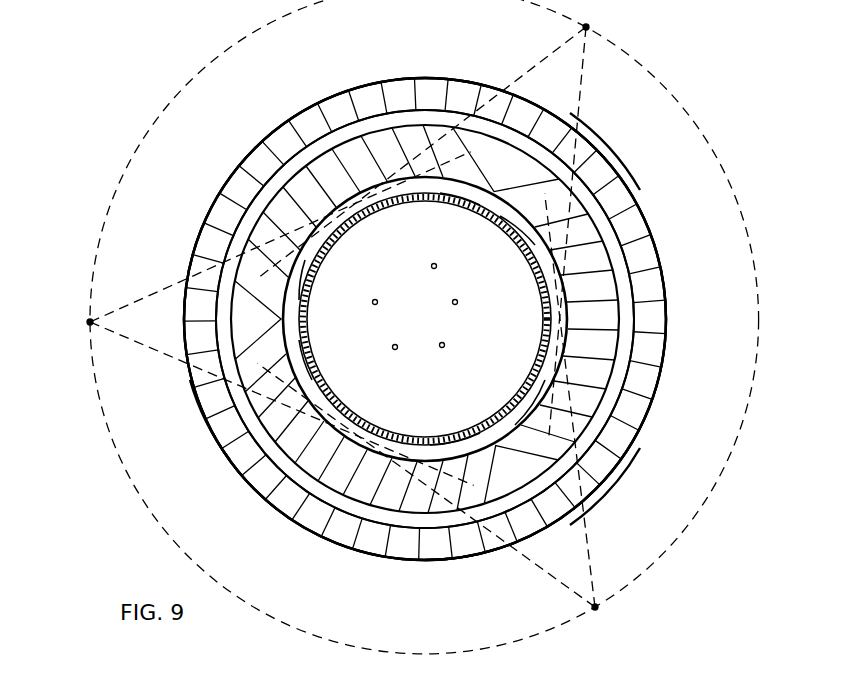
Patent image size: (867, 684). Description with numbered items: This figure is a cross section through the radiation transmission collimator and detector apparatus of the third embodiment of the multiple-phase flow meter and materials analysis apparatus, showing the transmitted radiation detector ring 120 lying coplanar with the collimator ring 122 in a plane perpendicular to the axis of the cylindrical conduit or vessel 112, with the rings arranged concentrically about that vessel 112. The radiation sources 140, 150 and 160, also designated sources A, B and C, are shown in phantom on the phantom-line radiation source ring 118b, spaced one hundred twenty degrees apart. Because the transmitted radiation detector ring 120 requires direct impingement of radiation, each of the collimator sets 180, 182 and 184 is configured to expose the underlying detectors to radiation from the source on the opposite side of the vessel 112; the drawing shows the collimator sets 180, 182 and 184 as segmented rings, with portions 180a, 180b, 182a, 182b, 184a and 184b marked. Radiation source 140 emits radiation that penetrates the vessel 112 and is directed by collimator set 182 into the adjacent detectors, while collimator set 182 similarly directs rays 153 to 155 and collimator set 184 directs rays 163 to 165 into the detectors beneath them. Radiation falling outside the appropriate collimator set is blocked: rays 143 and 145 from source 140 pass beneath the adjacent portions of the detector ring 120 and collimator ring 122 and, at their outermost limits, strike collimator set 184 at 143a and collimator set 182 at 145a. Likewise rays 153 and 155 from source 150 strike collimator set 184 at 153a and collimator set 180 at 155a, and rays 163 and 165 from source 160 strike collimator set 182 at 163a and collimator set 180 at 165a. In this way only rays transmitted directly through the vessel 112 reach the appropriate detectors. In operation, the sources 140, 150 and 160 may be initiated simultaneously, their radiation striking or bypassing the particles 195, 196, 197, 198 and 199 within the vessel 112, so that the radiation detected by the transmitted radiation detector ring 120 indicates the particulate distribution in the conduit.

The vessel 112 is at (505, 218).
The radiation source ring 118b is at (712, 150).
The transmitted radiation detector ring 120 is at (666, 262).
The collimator ring 122 is at (650, 304).
The radiation source 140 is at (588, 27).
The ray 143 is at (543, 60).
The ray 145 is at (580, 85).
The strike point on collimator set 184 143a is at (306, 286).
The strike point on collimator set 182 145a is at (530, 424).
The radiation source 150 is at (90, 322).
The ray 153 is at (130, 303).
The ray 155 is at (138, 343).
The strike point on collimator set 184 153a is at (458, 180).
The strike point on collimator set 180 155a is at (455, 448).
The radiation source 160 is at (598, 609).
The ray 163 is at (590, 548).
The ray 165 is at (542, 568).
The strike point on collimator set 182 163a is at (516, 228).
The strike point on collimator set 180 165a is at (300, 362).
The collimator set 180 is at (322, 503).
The outer ring segment 180a is at (245, 378).
The outer ring segment 180b is at (470, 520).
The collimator set 182 is at (648, 378).
The outer ring detector segment 182a is at (610, 428).
The outer ring detector segment 182b is at (600, 170).
The collimator set 184 is at (322, 136).
The inner ring wedge segment 184a is at (452, 140).
The inner ring wedge segment 184b is at (253, 246).
The particle 195 is at (437, 270).
The particle 196 is at (459, 303).
The particle 197 is at (372, 303).
The particle 198 is at (398, 347).
The particle 199 is at (446, 341).